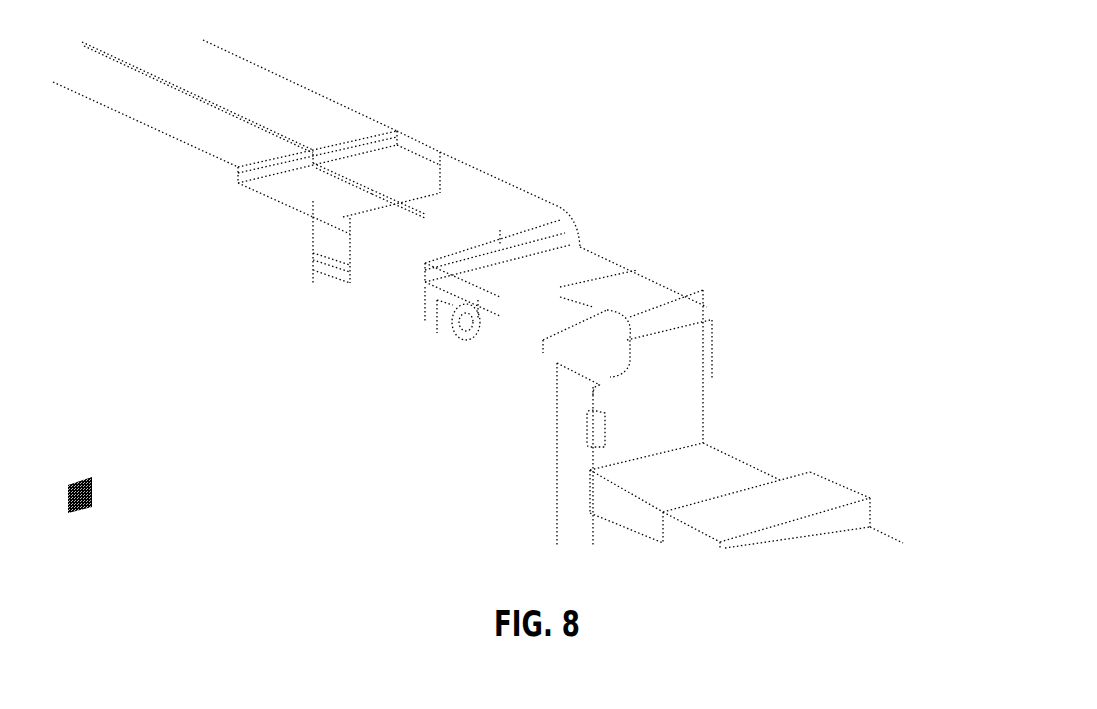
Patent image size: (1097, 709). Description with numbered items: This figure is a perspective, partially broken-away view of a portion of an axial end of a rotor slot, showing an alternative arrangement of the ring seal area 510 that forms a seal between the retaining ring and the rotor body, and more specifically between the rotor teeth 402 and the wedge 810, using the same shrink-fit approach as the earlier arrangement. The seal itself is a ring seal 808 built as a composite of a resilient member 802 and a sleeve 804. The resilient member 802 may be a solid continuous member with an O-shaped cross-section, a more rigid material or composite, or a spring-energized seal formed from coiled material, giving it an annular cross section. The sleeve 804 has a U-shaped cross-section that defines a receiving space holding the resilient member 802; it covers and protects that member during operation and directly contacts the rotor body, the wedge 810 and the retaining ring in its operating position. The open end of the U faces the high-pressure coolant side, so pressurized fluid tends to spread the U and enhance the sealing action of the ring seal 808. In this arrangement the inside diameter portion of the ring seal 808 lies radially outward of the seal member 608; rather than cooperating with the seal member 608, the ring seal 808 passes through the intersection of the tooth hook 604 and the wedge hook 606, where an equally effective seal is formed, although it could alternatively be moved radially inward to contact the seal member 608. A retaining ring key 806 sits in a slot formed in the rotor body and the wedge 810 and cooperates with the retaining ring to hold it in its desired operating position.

The rotor teeth 402 is at (230, 143).
The ring seal area 510 is at (649, 120).
The sleeve 804 is at (487, 293).
The ring seal 808 is at (614, 239).
The retaining ring key 806 is at (340, 227).
The resilient member 802 is at (462, 318).
The wedge hook 606 is at (607, 382).
The tooth hook 604 is at (600, 385).
The wedge 810 is at (688, 390).
The seal member 608 is at (595, 434).